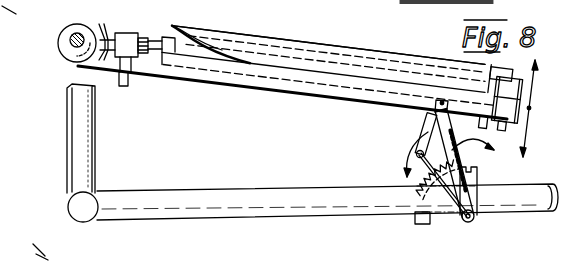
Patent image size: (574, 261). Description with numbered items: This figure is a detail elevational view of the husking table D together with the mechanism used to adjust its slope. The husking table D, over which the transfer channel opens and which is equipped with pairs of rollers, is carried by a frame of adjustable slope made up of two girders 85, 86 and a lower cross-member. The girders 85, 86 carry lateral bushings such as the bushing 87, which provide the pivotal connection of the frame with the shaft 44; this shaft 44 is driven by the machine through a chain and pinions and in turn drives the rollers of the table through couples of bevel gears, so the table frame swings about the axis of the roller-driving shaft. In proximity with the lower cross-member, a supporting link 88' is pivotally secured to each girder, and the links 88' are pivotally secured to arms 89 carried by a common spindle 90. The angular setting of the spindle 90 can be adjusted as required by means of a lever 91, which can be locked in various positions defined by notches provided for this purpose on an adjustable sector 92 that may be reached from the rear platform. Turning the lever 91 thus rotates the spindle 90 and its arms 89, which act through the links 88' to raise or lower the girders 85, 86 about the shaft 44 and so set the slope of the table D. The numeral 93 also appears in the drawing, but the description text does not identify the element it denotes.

The shaft 44 is at (75, 47).
The girder 85 is at (242, 86).
The girder 86 is at (335, 40).
The sled blade 93 is at (172, 31).
The husking table D is at (350, 42).
The lateral bushing 87 is at (517, 115).
The supporting link 88' is at (404, 135).
The arm 89 is at (406, 176).
The common spindle 90 is at (475, 223).
The lever 91 is at (463, 158).
The adjustable sector 92 is at (427, 219).